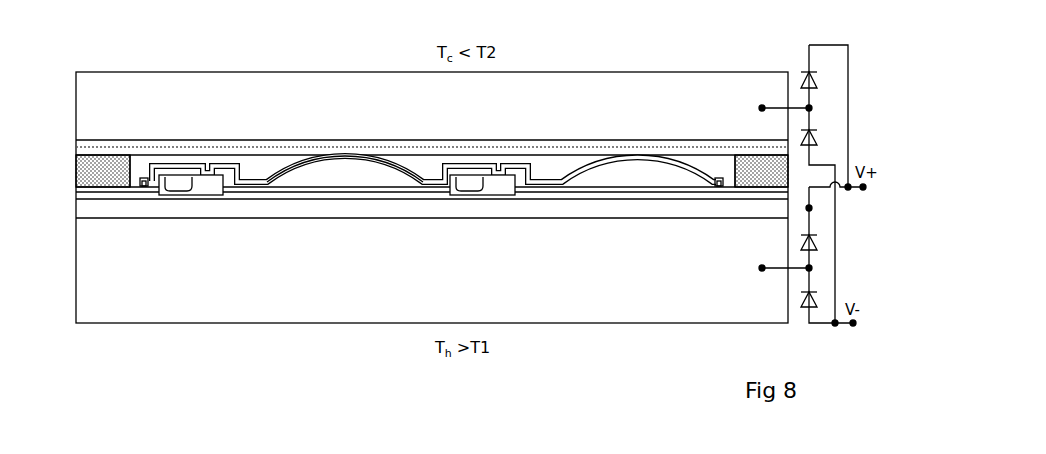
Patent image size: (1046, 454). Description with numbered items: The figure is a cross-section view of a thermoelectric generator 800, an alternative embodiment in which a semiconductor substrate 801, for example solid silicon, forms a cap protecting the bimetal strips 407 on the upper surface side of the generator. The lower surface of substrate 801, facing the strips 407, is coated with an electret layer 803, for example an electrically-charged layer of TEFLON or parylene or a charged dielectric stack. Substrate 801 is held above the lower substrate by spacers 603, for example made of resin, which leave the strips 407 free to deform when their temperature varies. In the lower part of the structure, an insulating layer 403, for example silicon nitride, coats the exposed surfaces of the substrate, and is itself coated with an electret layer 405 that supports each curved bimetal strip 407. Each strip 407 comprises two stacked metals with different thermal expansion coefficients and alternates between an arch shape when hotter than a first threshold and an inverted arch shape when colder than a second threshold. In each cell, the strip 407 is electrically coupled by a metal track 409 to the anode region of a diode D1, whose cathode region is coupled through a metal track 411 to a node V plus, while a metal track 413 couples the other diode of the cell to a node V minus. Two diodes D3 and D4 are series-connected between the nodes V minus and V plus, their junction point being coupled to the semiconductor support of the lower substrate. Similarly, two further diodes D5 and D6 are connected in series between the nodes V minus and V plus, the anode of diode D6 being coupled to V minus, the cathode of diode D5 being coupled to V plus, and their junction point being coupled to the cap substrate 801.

The thermoelectric generator 800 is at (660, 57).
The substrate 801 is at (93, 107).
The electret layer 803 is at (93, 148).
The spacers 603 is at (105, 178).
The insulating layer 403 is at (311, 197).
The electret layer 405 is at (343, 197).
The bimetal strip 407 is at (396, 164).
The metal track 409 is at (237, 165).
The metal track 411 is at (719, 178).
The metal track 413 is at (146, 177).
The diode D1 is at (196, 180).
The diode D3 is at (812, 241).
The diode D4 is at (812, 298).
The diode D5 is at (812, 79).
The diode D6 is at (812, 136).